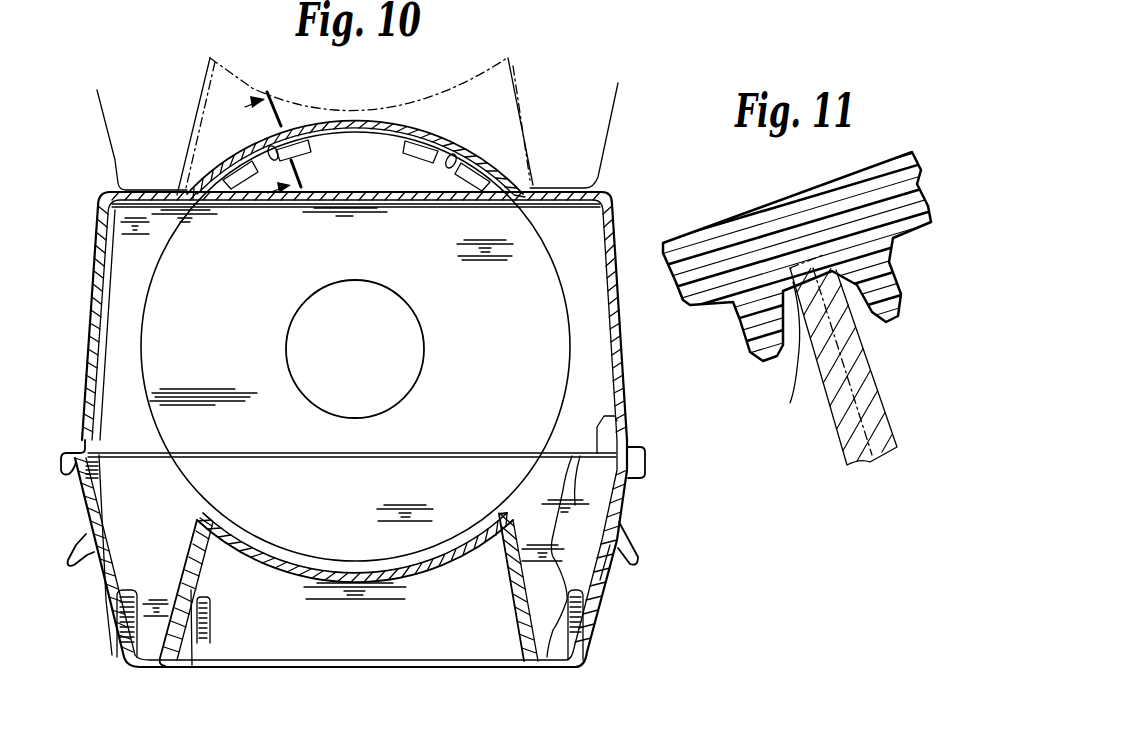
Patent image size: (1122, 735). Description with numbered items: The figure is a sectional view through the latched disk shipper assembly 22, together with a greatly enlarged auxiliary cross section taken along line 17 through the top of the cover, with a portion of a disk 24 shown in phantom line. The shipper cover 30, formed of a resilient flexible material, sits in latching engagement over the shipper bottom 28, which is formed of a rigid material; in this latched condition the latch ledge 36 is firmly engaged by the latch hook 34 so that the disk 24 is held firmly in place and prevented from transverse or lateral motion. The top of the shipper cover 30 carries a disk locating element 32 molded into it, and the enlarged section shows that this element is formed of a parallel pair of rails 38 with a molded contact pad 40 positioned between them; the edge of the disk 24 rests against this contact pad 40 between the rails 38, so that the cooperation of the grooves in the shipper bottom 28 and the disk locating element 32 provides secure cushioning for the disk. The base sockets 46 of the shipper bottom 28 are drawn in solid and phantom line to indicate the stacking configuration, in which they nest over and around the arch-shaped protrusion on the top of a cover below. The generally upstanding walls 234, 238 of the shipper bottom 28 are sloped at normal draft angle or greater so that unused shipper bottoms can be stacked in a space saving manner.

In FIG. 10, the section line 17— 17 is at (289, 140).
In FIG. 10, the disk shipper assembly 22 is at (668, 463).
In FIG. 10, the disk 24 is at (572, 360).
In FIG. 11, the disk 24 is at (825, 417).
In FIG. 10, the shipper bottom 28 is at (108, 623).
In FIG. 10, the shipper cover 30 is at (90, 332).
In FIG. 10, the disk locating element 32 is at (291, 122).
In FIG. 10, the latch hook 34 is at (632, 566).
In FIG. 10, the latch ledge 36 is at (634, 550).
In FIG. 10, the rail 38 is at (255, 159).
In FIG. 11, the rail 38 is at (893, 320).
In FIG. 10, the contact pad 40 is at (271, 146).
In FIG. 11, the contact pad 40 is at (780, 350).
In FIG. 10, the base socket 46 is at (110, 160).
In FIG. 10, the upstanding wall 234 is at (523, 623).
In FIG. 10, the upstanding wall 238 is at (600, 613).